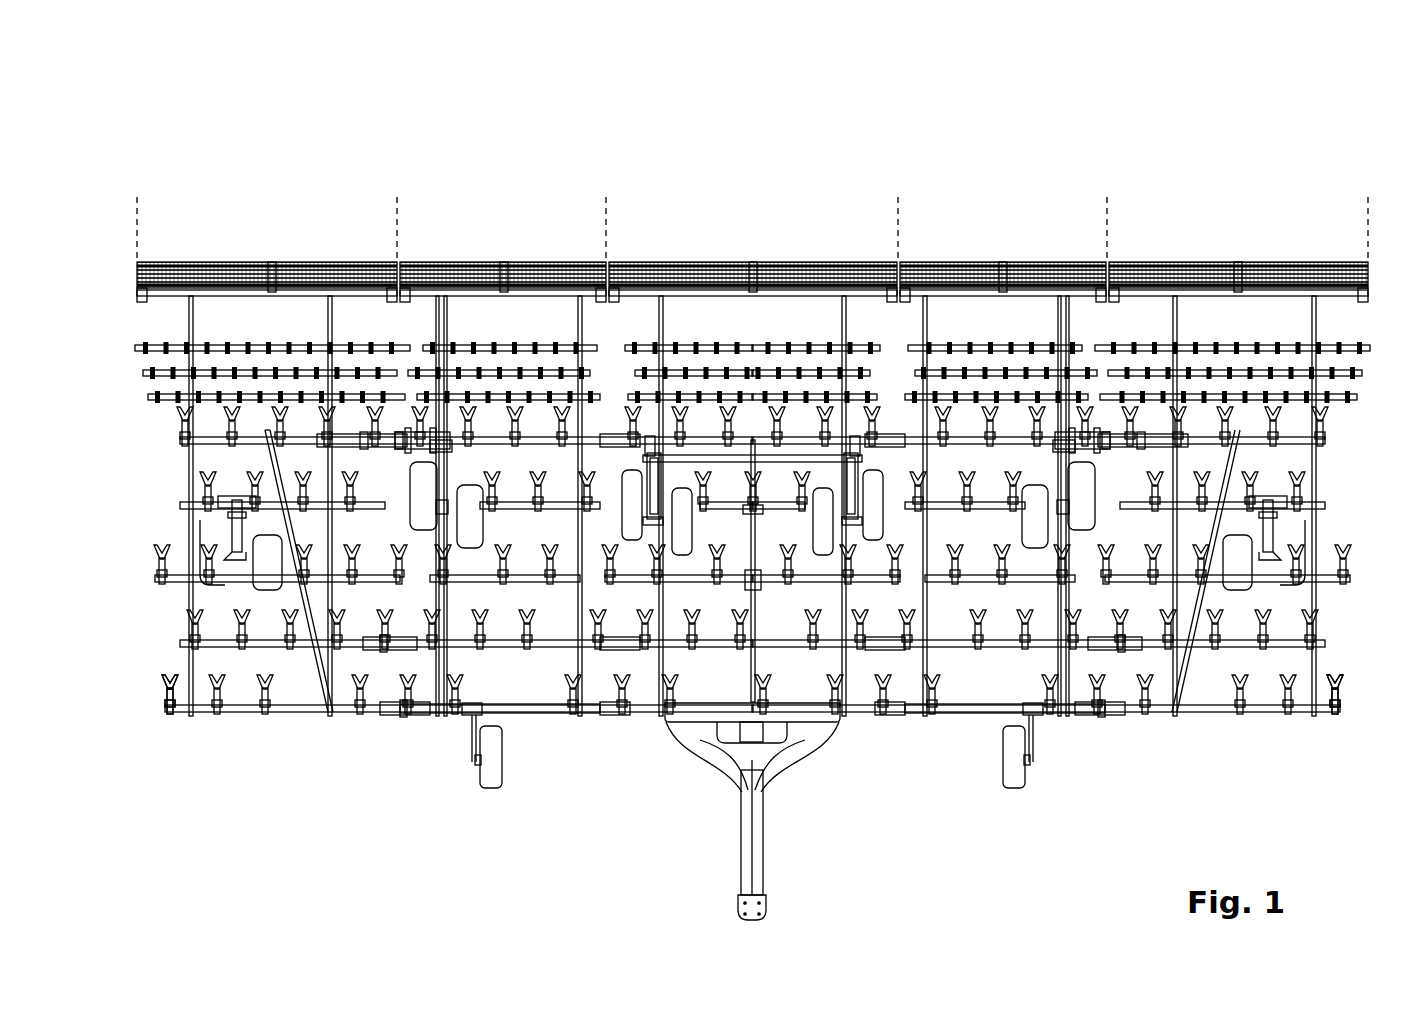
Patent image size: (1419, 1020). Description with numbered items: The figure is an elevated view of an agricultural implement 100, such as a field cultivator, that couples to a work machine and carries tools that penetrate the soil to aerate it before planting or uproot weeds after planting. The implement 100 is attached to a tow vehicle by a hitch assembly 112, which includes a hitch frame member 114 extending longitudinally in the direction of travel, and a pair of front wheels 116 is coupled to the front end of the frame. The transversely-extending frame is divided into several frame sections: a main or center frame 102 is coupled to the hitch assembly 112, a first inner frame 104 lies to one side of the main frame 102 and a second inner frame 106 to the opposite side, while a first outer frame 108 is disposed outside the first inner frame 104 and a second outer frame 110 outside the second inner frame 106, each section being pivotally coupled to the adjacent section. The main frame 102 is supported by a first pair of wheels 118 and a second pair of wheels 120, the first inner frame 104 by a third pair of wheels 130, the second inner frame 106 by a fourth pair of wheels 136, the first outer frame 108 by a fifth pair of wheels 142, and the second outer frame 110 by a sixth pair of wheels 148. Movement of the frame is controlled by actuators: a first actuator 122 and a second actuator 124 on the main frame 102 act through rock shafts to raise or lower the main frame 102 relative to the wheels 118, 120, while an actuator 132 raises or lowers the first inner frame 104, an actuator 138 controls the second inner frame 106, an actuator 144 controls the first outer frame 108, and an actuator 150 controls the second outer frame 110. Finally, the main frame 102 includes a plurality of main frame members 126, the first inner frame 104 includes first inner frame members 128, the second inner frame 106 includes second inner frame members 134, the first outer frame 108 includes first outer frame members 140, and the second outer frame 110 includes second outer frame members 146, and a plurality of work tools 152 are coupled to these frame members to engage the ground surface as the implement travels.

The agricultural implement 100 is at (750, 501).
The main frame 102 is at (739, 250).
The first inner frame 104 is at (499, 250).
The second inner frame 106 is at (998, 250).
The first outer frame 108 is at (265, 250).
The second outer frame 110 is at (1184, 250).
The hitch assembly 112 is at (766, 916).
The hitch frame member 114 is at (746, 878).
The front wheels 116 is at (490, 790).
The first pair of wheels 118 is at (633, 545).
The second pair of wheels 120 is at (873, 545).
The first actuator 122 is at (657, 452).
The second actuator 124 is at (849, 452).
The main frame members 126 is at (805, 714).
The first inner frame members 128 is at (528, 714).
The third pair of wheels 130 is at (470, 545).
The actuator 132 is at (437, 430).
The second inner frame members 134 is at (987, 714).
The fourth pair of wheels 136 is at (1035, 545).
The actuator 138 is at (1066, 430).
The first outer frame members 140 is at (291, 718).
The fifth pair of wheels 142 is at (262, 585).
The actuator 144 is at (235, 522).
The second outer frame members 146 is at (1214, 718).
The sixth pair of wheels 148 is at (1243, 585).
The actuator 150 is at (1267, 525).
The work tools 152 is at (168, 692).